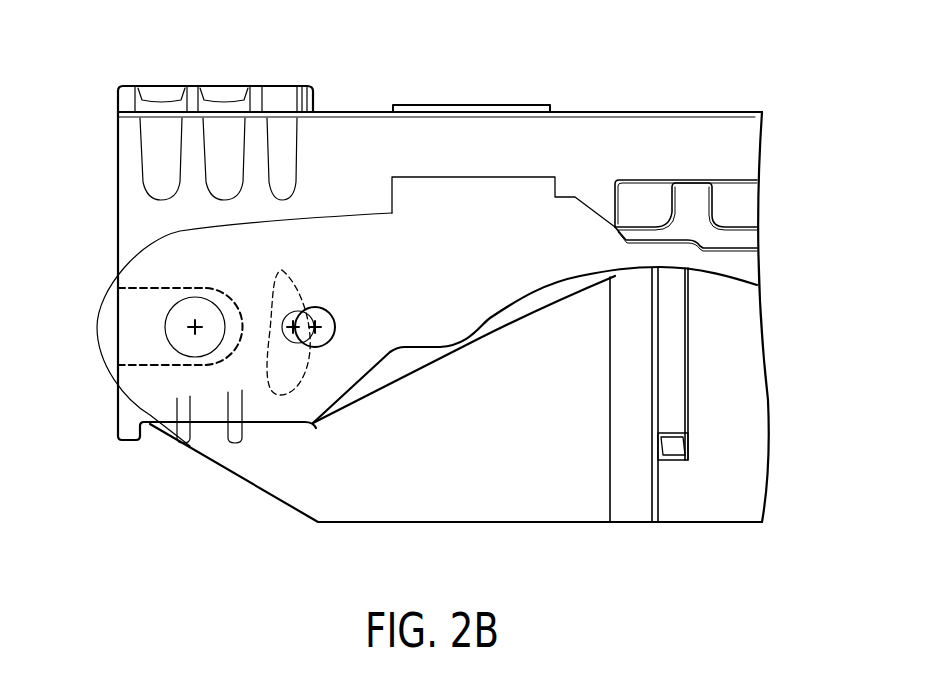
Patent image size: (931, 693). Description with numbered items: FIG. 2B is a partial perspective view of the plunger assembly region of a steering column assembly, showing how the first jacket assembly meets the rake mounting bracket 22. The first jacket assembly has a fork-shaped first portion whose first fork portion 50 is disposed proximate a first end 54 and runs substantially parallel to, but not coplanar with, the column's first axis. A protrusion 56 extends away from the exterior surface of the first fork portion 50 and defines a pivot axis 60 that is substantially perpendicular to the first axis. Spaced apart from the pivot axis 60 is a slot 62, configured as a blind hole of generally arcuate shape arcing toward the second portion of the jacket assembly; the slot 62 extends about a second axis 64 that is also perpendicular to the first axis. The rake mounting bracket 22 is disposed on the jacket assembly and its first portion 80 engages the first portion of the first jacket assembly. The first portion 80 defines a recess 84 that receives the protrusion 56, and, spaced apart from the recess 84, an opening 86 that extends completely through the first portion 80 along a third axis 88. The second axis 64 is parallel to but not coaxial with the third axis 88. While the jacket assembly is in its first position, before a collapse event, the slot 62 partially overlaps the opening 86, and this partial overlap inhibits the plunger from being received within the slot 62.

The rake mounting bracket 22 is at (428, 88).
The first fork portion 50 is at (577, 545).
The first end 54 is at (96, 320).
The protrusion 56 is at (165, 328).
The pivot axis 60 is at (193, 332).
The slot 62 is at (300, 285).
The second axis 64 is at (294, 335).
The first portion of the rake mounting bracket 80 is at (132, 127).
The recess 84 is at (133, 288).
The opening 86 is at (334, 327).
The third axis 88 is at (317, 337).